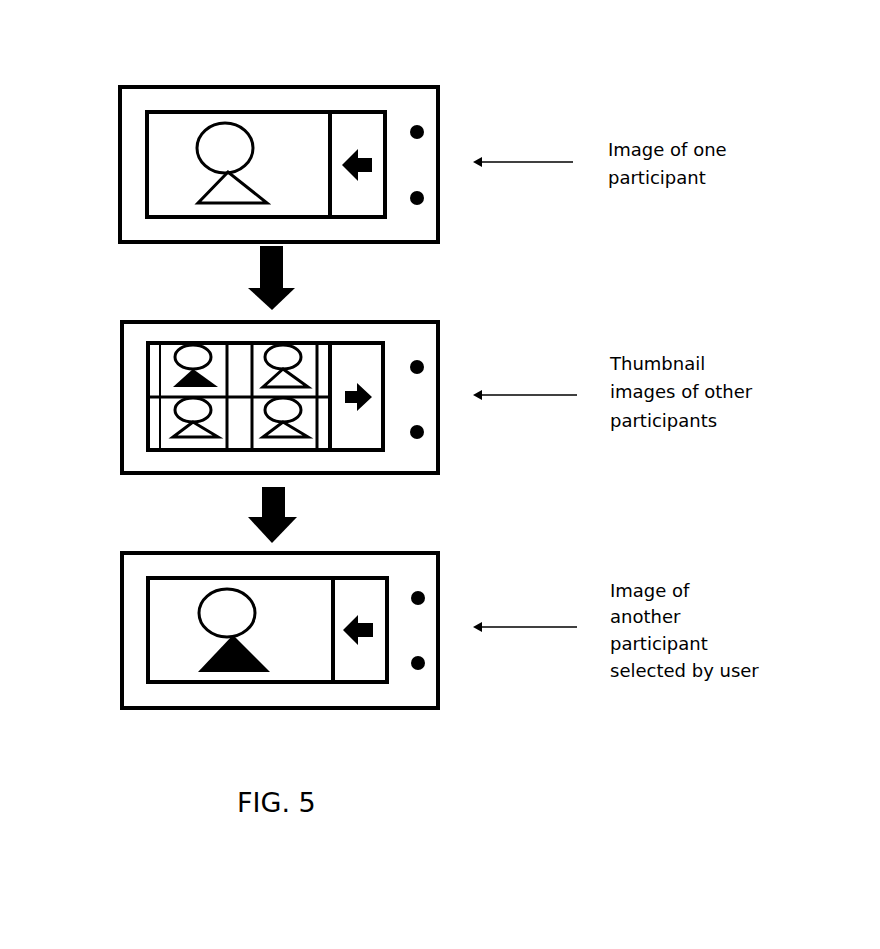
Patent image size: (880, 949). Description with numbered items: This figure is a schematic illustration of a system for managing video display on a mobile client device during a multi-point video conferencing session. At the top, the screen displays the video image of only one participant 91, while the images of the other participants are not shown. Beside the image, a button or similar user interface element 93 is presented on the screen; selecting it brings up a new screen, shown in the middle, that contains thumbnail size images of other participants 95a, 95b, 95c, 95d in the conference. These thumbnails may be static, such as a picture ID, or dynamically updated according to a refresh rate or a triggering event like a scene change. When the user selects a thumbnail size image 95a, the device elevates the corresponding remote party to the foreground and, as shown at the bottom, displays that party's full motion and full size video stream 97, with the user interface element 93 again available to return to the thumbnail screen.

The participant 91 is at (272, 127).
The user interface element 93 is at (370, 133).
The thumbnail size image of other participant 95a is at (152, 348).
The thumbnail size image of other participant 95b is at (152, 440).
The thumbnail size image of other participant 95c is at (305, 357).
The thumbnail size image of other participant 95d is at (313, 440).
The video stream of selected party 97 is at (165, 663).